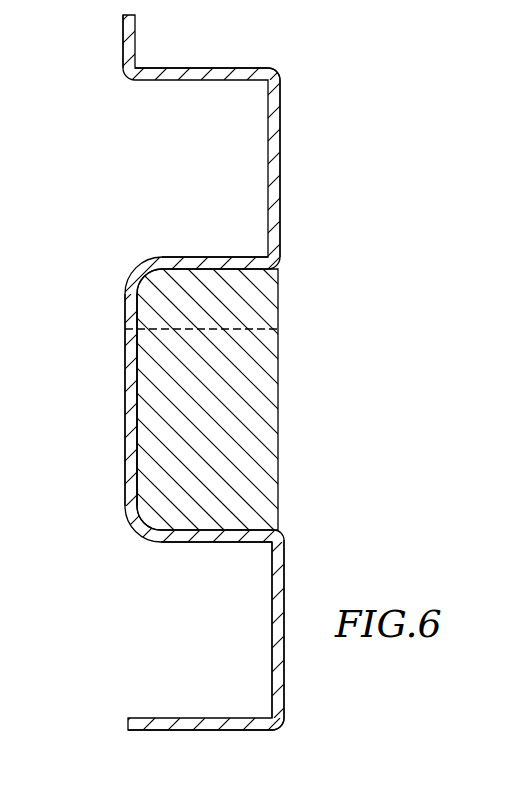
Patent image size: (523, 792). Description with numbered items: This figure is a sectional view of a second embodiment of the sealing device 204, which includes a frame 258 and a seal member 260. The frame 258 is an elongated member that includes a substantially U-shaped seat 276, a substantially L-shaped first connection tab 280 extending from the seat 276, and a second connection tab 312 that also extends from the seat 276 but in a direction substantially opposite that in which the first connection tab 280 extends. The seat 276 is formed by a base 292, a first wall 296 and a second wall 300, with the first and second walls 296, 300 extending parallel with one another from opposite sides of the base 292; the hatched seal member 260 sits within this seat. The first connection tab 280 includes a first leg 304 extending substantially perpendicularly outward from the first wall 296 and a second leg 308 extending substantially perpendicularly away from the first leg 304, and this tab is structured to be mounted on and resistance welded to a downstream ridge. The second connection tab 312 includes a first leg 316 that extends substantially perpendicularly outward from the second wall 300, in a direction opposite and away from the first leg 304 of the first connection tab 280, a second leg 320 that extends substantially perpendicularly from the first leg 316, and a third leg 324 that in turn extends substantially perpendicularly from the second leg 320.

The sealing device 204 is at (302, 280).
The frame 258 is at (290, 575).
The seal member 260 is at (278, 375).
The seat 276 is at (122, 378).
The first connection tab 280 is at (290, 668).
The base 292 is at (125, 455).
The first wall 296 is at (218, 542).
The second wall 300 is at (200, 257).
The first leg 304 is at (285, 688).
The second leg 308 is at (180, 732).
The second connection tab 312 is at (283, 155).
The first leg 316 is at (280, 108).
The second leg 320 is at (211, 68).
The third leg 324 is at (124, 32).